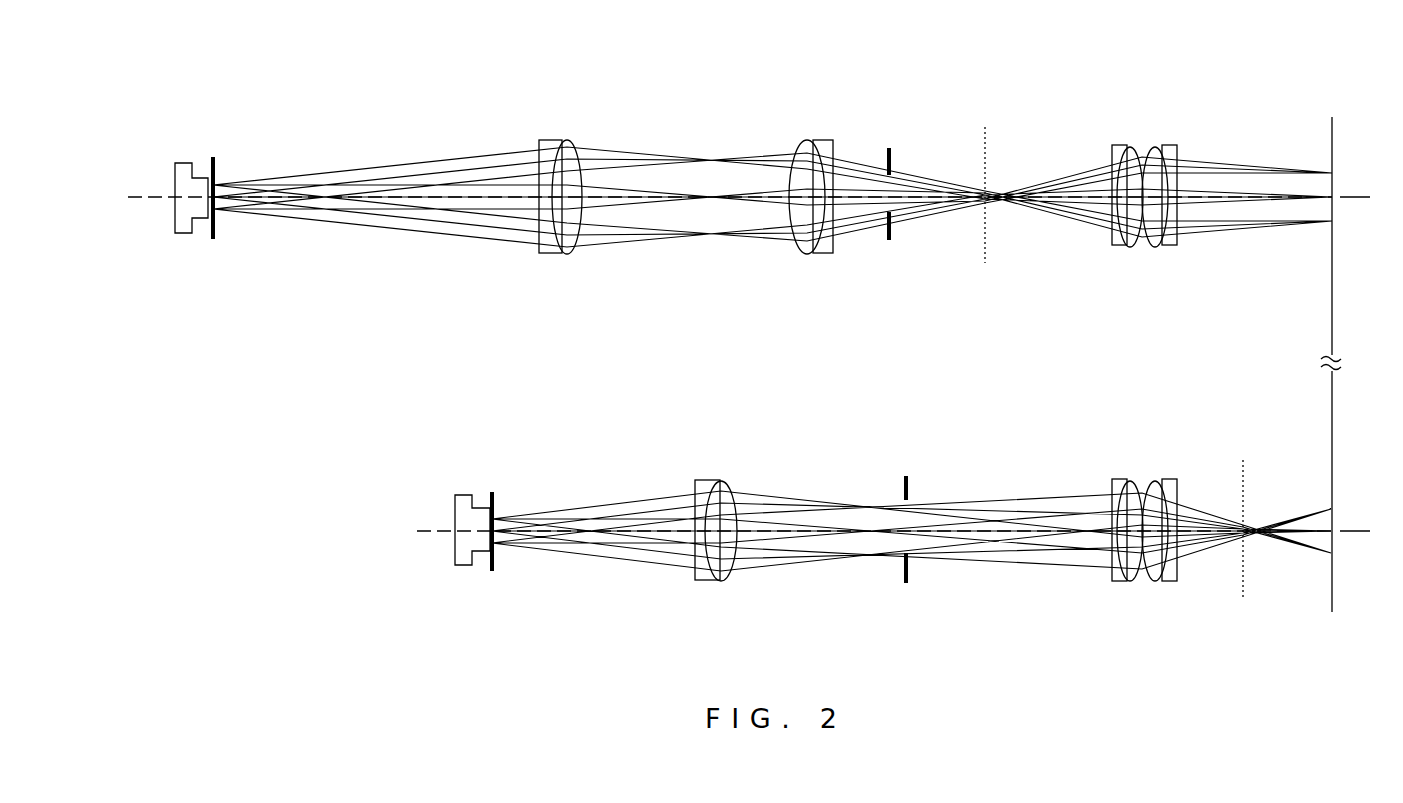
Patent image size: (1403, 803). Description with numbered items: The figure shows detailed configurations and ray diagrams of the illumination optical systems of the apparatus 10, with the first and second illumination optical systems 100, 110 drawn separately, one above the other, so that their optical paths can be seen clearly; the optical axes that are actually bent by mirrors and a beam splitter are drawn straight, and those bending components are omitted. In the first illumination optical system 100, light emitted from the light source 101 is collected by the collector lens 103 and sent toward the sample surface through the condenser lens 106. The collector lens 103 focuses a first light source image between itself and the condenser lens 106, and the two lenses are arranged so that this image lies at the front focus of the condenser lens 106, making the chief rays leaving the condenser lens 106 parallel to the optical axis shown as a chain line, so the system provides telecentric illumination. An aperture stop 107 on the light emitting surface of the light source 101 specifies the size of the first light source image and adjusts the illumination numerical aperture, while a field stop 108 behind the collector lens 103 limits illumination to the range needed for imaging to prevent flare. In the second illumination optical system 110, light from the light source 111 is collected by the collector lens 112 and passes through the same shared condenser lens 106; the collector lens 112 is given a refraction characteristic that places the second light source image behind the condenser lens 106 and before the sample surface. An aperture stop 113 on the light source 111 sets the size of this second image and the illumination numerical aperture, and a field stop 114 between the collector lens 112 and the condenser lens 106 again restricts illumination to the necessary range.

The optical apparatus 10 is at (284, 375).
The first illumination optical system 100 is at (353, 126).
The light source 101 is at (190, 162).
The aperture stop 107 is at (215, 157).
The collector lens 103 is at (533, 122).
The field stop 108 is at (889, 147).
The condenser lens 106 is at (1182, 128).
The second illumination optical system 110 is at (617, 429).
The light source 111 is at (462, 494).
The aperture stop 113 is at (494, 490).
The collector lens 112 is at (706, 480).
The field stop 114 is at (906, 475).